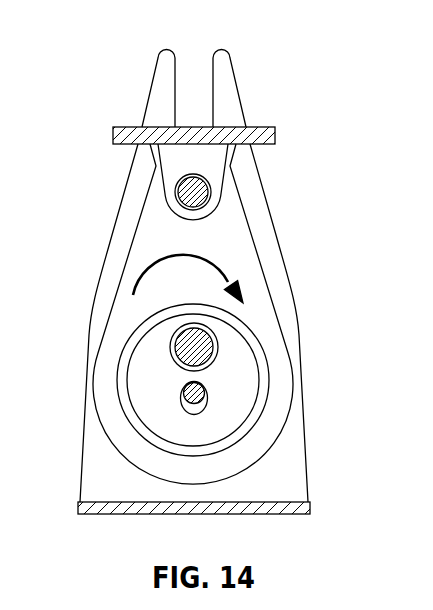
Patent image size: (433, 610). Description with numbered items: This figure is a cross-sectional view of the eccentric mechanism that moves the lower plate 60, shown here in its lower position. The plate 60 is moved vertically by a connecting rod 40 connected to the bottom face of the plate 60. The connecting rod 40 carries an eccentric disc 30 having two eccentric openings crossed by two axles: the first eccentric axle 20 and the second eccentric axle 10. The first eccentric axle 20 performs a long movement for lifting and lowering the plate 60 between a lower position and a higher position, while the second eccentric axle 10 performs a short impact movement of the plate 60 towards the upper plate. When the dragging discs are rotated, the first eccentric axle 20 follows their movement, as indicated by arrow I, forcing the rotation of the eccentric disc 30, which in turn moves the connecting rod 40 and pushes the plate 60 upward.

The second eccentric axle 10 is at (198, 342).
The first eccentric axle 20 is at (207, 390).
The eccentric disc 30 is at (150, 374).
The connecting rod 40 is at (217, 263).
The plate 60 is at (138, 128).